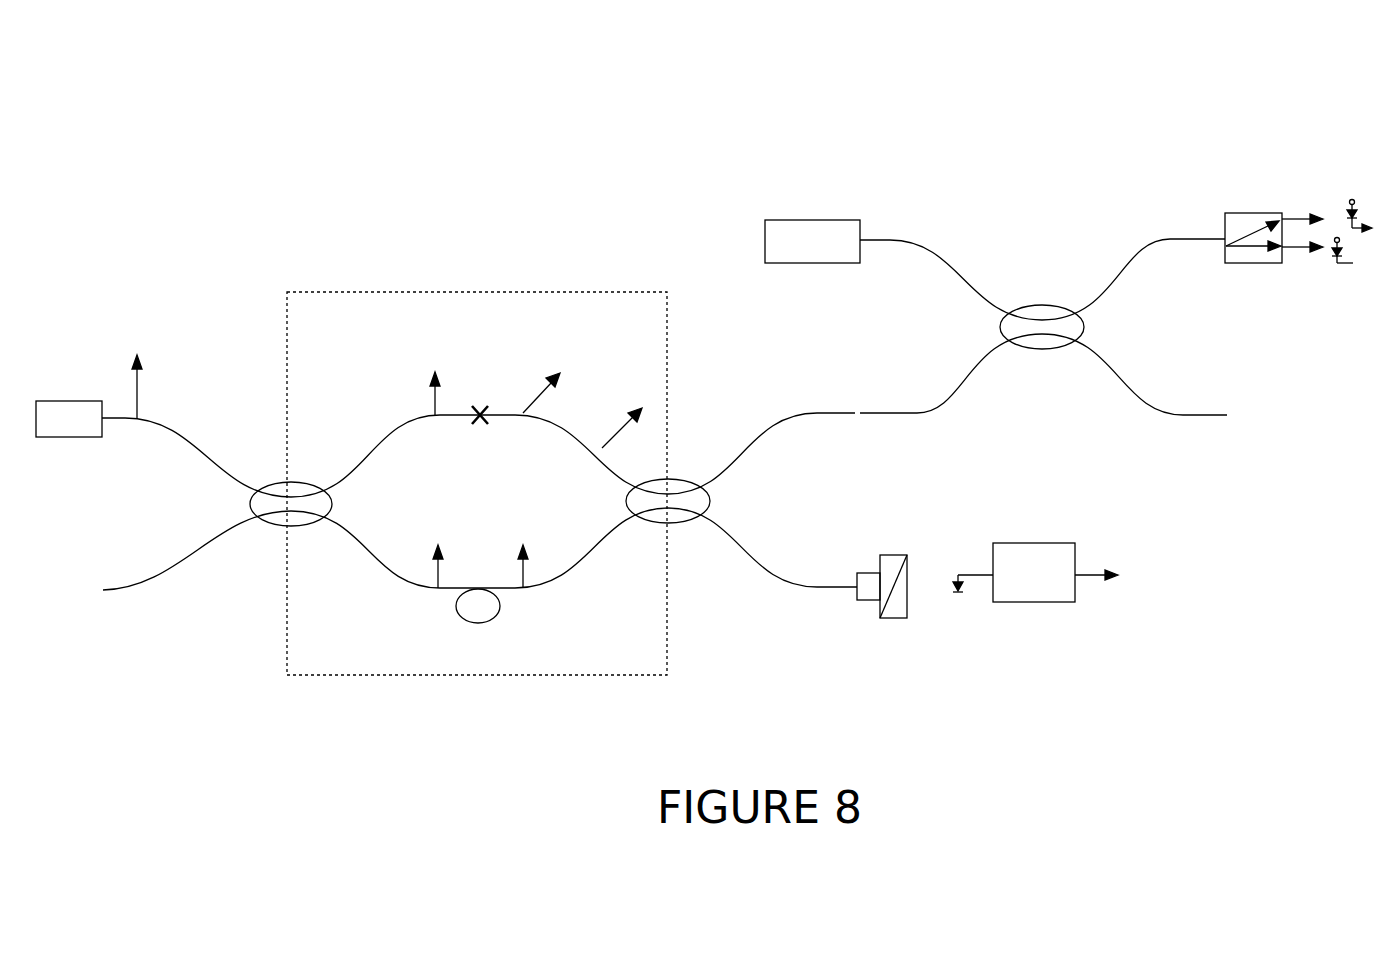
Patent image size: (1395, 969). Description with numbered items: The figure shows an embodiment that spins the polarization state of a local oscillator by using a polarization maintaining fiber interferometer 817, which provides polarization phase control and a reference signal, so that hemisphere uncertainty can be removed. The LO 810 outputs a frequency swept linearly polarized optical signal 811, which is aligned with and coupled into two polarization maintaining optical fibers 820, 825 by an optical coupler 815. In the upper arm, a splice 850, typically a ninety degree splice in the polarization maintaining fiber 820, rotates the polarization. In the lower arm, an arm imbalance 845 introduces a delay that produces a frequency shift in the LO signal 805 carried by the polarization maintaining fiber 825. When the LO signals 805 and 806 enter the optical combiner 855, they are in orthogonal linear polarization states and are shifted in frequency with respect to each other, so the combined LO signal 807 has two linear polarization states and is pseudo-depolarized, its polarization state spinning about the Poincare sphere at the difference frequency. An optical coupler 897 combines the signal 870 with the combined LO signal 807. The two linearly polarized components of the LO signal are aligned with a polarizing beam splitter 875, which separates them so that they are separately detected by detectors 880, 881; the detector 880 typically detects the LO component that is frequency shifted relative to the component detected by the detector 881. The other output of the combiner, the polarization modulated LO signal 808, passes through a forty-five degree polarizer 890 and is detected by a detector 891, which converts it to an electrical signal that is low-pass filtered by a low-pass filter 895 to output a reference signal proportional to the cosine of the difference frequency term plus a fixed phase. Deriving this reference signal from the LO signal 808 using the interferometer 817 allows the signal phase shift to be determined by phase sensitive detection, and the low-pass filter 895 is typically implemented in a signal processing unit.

The LO signal 805 is at (531, 400).
The LO optical signal 806 is at (526, 559).
The LO signal 807 is at (824, 396).
The polarization modulated LO signal 808 is at (800, 564).
The LO 810 is at (47, 401).
The frequency swept linearly polarized optical signal 811 is at (139, 393).
The optical coupler 815 is at (295, 485).
The polarization maintaining fiber interferometer 817 is at (588, 291).
The polarization maintaining optical fiber 820 is at (372, 440).
The polarization maintaining optical fiber 825 is at (378, 570).
The arm imbalance 845 is at (500, 609).
The splice 850 is at (480, 409).
The optical combiner 855 is at (672, 481).
The signal 870 is at (840, 222).
The polarizing beam splitter 875 is at (1250, 214).
The detector 880 is at (1352, 199).
The detector 881 is at (1353, 264).
The 45° polarizer 890 is at (892, 555).
The detector 891 is at (961, 597).
The low-pass filter 895 is at (1022, 545).
The optical coupler 897 is at (1046, 310).